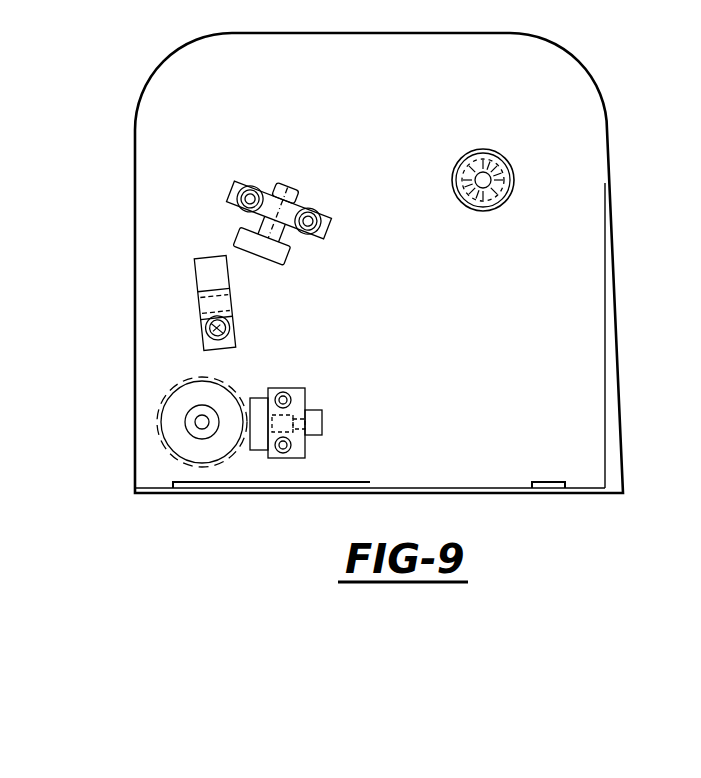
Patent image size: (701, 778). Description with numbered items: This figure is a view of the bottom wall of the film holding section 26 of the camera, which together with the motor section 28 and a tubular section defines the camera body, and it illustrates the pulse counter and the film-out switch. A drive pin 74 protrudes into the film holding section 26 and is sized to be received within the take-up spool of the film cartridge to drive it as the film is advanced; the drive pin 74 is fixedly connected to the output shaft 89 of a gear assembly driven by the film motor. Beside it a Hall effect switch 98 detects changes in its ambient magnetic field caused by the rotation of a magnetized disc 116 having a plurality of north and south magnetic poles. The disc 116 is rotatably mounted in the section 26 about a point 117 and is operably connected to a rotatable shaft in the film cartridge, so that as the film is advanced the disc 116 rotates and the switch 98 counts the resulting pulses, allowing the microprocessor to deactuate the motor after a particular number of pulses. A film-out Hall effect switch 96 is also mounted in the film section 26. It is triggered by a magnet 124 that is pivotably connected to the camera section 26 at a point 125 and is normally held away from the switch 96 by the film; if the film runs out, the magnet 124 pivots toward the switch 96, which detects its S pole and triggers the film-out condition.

The film holding section 26 is at (583, 162).
The motor section 28 is at (590, 63).
The drive pin 74 is at (480, 160).
The output shaft 89 is at (491, 172).
The film-out Hall effect switch 96 is at (294, 257).
The Hall effect switch 98 is at (258, 396).
The magnetized disc 116 is at (224, 382).
The point 117 is at (193, 430).
The magnet 124 is at (198, 272).
The point 125 is at (236, 318).